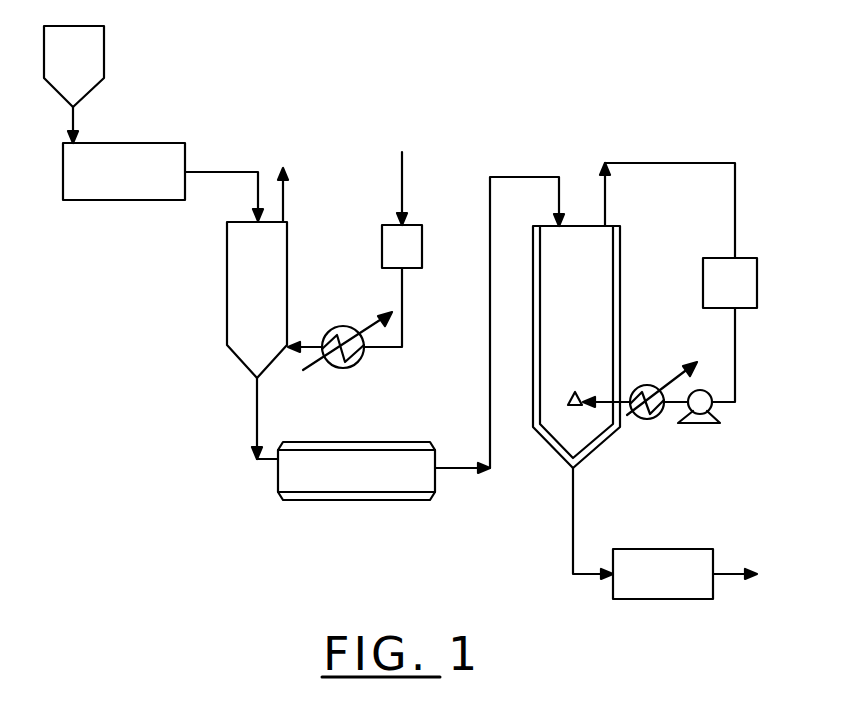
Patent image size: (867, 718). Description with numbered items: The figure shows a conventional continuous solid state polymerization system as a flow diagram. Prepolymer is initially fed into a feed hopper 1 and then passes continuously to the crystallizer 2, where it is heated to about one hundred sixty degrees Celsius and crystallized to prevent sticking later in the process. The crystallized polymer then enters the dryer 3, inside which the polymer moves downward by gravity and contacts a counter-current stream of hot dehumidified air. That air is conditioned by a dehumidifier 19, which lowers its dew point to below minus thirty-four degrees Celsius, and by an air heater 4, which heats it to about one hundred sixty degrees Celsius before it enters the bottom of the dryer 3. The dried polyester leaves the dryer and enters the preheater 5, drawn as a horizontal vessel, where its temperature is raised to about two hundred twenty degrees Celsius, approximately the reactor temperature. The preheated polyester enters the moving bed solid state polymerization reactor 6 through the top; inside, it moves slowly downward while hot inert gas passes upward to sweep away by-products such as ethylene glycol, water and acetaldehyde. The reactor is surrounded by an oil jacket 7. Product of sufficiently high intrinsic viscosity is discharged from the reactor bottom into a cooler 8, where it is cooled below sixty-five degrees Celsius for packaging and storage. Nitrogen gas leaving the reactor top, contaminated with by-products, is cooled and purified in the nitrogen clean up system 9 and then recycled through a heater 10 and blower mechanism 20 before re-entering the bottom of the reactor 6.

The feed hopper 1 is at (88, 62).
The crystallizer 2 is at (124, 153).
The dryer 3 is at (272, 300).
The air heater 4 is at (347, 328).
The preheater 5 is at (336, 481).
The moving bed solid state polymerization reactor 6 is at (592, 342).
The oil jacket 7 is at (592, 343).
The cooler 8 is at (663, 553).
The nitrogen clean up system 9 is at (731, 264).
The heater 10 is at (657, 413).
The dehumidifier 19 is at (423, 234).
The blower mechanism 20 is at (712, 425).